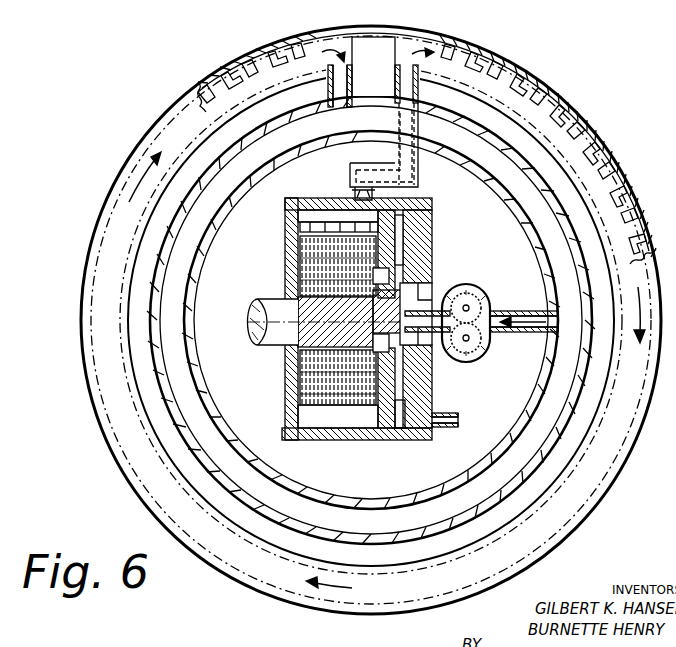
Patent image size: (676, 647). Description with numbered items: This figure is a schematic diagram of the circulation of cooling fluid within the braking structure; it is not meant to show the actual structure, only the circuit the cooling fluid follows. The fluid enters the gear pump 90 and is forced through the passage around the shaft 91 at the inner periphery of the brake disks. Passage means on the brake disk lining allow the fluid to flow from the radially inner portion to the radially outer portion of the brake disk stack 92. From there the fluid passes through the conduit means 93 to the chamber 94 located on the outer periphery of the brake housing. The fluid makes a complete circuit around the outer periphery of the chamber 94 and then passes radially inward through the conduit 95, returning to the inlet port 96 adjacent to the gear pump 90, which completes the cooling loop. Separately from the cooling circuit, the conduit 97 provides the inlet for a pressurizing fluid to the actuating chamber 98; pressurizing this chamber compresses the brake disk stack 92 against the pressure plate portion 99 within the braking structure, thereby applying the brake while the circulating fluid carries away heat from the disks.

The gear pump 90 is at (468, 291).
The shaft 91 is at (260, 306).
The brake disk stack 92 is at (306, 254).
The conduit means 93 is at (420, 167).
The chamber 94 is at (478, 63).
The conduit 95 is at (338, 104).
The inlet port 96 is at (545, 327).
The conduit 97 is at (437, 428).
The actuating chamber 98 is at (399, 424).
The pressure plate portion 99 is at (362, 418).